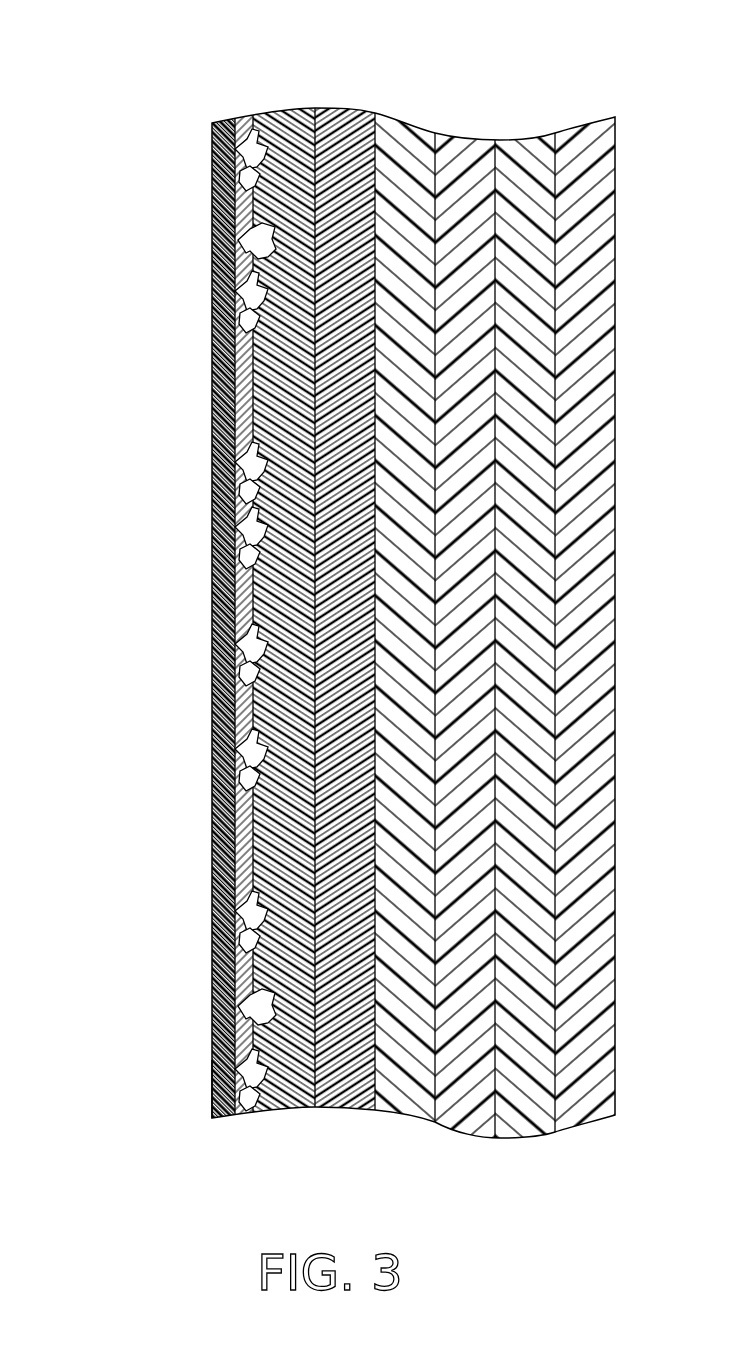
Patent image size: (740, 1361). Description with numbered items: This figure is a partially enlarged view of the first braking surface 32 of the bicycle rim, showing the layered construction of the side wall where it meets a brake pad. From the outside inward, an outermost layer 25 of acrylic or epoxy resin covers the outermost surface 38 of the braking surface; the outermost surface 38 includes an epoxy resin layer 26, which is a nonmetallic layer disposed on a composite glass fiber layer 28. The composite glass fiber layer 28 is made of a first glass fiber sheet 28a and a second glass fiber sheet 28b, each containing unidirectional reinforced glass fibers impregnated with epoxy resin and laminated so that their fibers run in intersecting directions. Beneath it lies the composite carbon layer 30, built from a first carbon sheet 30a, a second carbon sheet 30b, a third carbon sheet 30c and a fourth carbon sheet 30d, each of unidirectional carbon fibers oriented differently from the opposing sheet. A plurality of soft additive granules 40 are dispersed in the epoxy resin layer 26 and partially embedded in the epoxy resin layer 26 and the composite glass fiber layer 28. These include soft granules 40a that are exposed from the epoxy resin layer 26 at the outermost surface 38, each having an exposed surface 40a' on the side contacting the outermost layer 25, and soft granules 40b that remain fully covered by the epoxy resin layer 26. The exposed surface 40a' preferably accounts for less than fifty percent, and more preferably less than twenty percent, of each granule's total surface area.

The outermost layer 25 is at (220, 118).
The epoxy resin layer 26 is at (243, 130).
The composite glass fiber layer 28 is at (314, 577).
The first glass fiber sheet 28a is at (283, 135).
The second glass fiber sheet 28b is at (342, 138).
The composite carbon layer 30 is at (496, 577).
The first carbon sheet 30a is at (407, 160).
The second carbon sheet 30b is at (467, 160).
The third carbon sheet 30c is at (525, 165).
The fourth carbon sheet 30d is at (585, 599).
The first braking surface 32 is at (97, 188).
The outermost surface 38 is at (213, 1107).
The soft additive granules 40 is at (172, 621).
The soft granules 40a is at (201, 609).
The exposed surface 40a' is at (199, 641).
The soft granules 40b is at (212, 240).